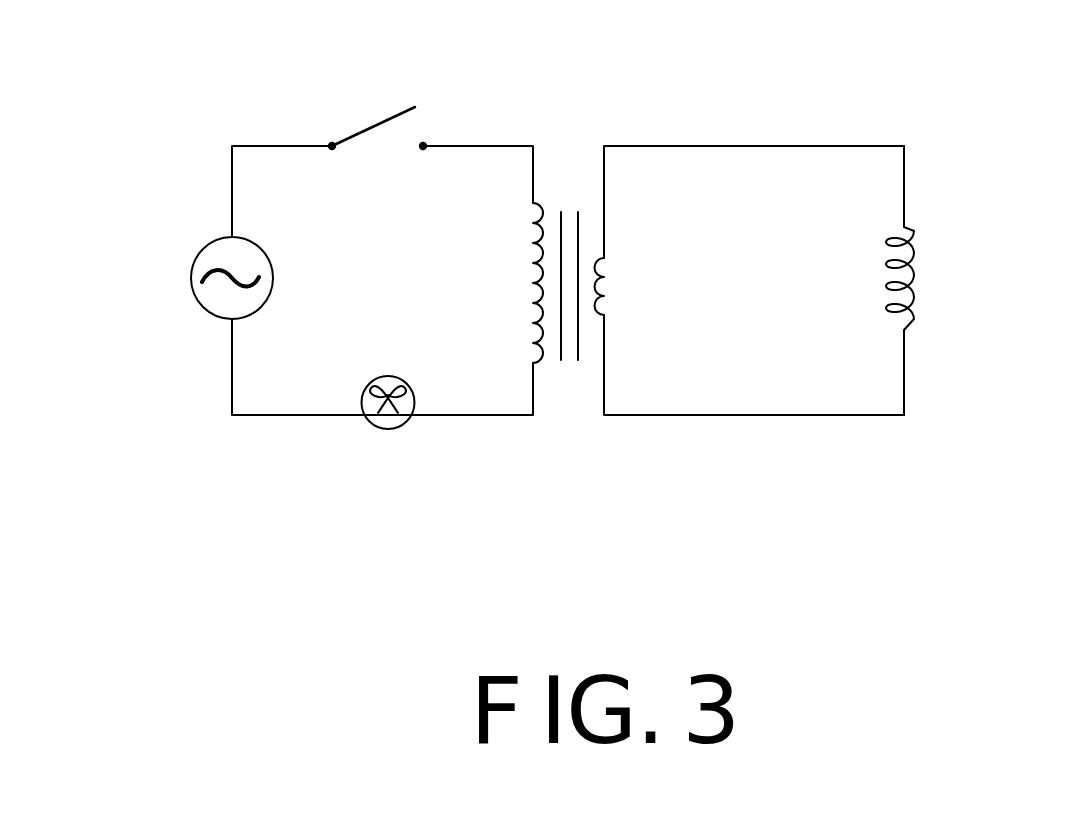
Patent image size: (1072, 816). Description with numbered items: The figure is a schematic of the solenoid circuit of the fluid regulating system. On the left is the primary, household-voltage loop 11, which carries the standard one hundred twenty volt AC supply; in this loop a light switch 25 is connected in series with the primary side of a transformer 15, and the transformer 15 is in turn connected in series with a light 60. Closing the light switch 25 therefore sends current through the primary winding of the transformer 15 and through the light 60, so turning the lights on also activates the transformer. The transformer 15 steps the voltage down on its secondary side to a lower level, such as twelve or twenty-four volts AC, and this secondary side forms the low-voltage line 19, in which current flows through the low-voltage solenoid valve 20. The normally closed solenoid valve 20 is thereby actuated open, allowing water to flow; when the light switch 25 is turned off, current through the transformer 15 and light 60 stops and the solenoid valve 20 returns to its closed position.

The primary circuit (AC power source circuit) 11 is at (250, 146).
The light switch 25 is at (378, 124).
The transformer 15 is at (571, 178).
The low-voltage line 19 is at (768, 146).
The solenoid valve 20 is at (915, 278).
The light 60 is at (381, 421).